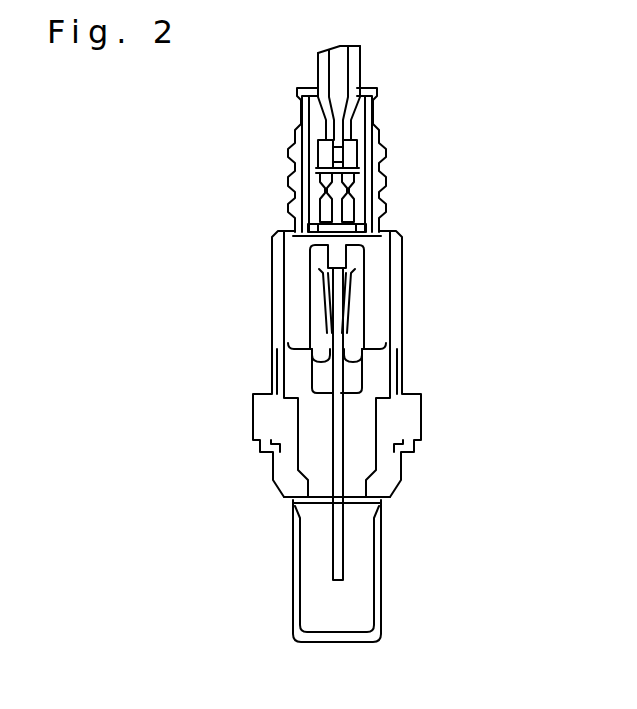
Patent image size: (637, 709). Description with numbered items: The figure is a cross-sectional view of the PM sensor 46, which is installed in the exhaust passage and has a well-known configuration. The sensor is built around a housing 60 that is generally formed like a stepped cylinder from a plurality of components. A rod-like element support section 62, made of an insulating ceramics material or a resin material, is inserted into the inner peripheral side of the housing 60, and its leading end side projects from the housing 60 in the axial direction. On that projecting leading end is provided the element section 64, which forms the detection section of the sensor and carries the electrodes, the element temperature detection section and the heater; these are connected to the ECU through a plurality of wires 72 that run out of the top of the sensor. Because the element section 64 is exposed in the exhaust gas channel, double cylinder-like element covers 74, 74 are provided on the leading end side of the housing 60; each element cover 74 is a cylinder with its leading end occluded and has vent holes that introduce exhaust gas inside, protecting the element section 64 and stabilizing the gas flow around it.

The PM sensor 46 is at (222, 213).
The wires 72 is at (327, 120).
The housing 60 is at (401, 418).
The element support section 62 is at (338, 430).
The element section 64 is at (328, 571).
The element cover 74 is at (293, 545).